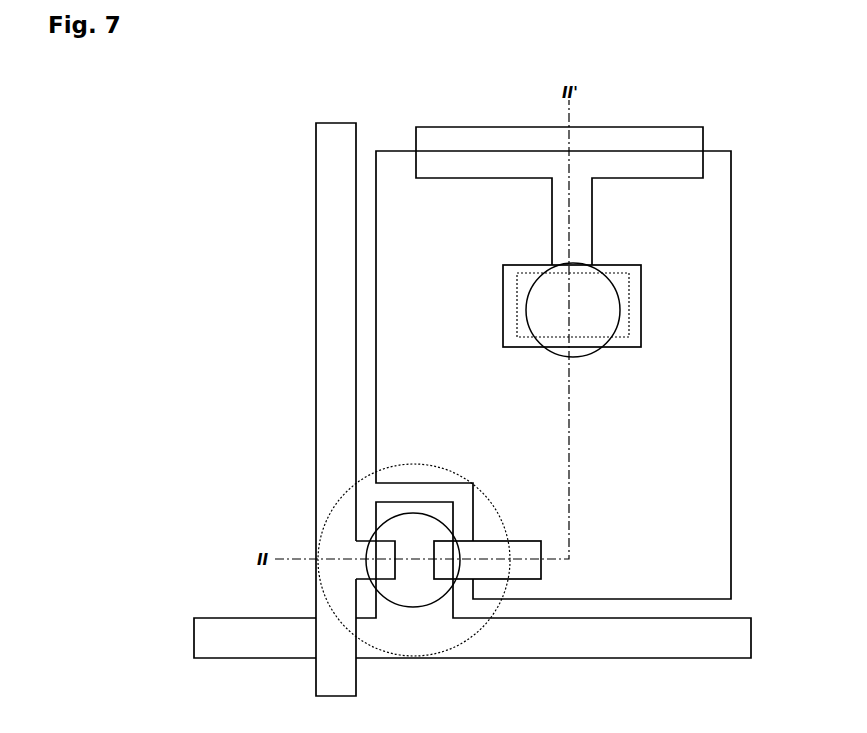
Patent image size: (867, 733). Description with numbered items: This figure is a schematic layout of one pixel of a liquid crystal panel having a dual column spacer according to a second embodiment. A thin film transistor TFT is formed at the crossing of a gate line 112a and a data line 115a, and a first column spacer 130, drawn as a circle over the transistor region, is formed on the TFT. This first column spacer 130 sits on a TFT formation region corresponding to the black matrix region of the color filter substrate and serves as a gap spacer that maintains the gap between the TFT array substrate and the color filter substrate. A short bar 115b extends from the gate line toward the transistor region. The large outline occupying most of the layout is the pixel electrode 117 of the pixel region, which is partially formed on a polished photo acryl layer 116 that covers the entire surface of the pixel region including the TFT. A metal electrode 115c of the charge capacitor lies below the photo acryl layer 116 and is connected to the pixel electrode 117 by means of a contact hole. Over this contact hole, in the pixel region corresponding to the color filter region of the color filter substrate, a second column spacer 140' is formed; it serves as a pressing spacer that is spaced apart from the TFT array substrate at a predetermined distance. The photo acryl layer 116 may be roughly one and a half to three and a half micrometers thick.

The data line 115a is at (352, 677).
The gate line 112a is at (243, 621).
The gate electrode 115b is at (514, 541).
The metal electrode 115c is at (486, 180).
The pixel electrode 117 is at (377, 348).
The polished photo acryl layer 116 is at (642, 294).
The second column spacer 140' is at (590, 324).
The first column spacer 130 is at (420, 606).
The thin film transistor TFT is at (452, 471).